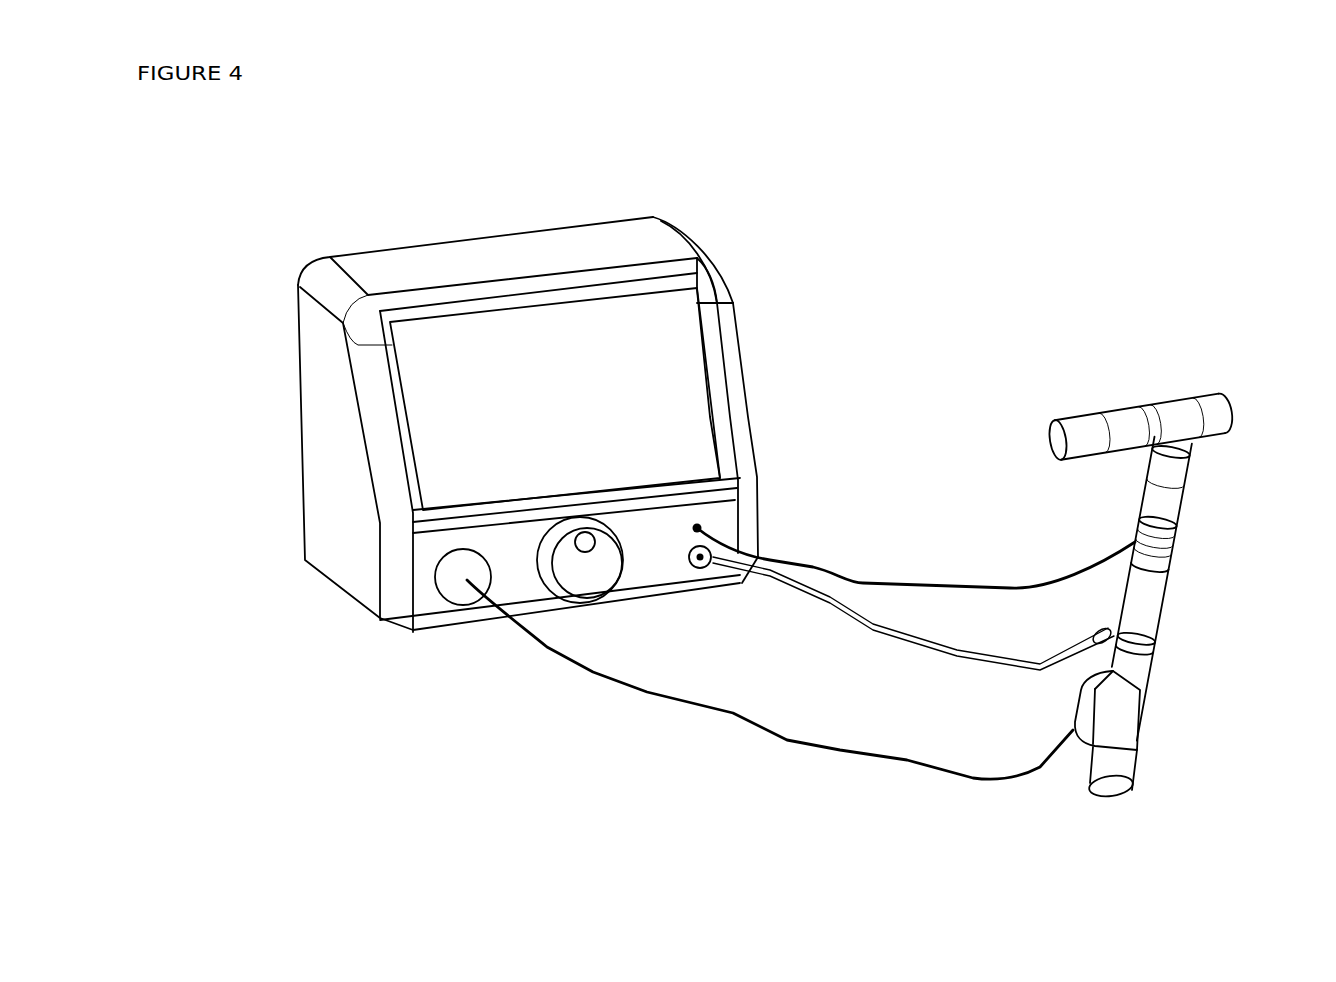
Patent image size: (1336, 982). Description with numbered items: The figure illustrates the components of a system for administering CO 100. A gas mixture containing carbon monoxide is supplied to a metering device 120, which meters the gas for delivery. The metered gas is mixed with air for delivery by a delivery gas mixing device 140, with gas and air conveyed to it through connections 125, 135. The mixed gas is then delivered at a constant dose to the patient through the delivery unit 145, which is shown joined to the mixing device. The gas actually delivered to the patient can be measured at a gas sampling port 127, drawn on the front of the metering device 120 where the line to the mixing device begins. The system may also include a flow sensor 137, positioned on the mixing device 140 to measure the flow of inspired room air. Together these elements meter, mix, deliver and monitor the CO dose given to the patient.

The system for administering CO 100 is at (313, 176).
The metering device 120 is at (551, 405).
The connection 125 is at (957, 653).
The gas sampling port 127 is at (1133, 542).
The connection 135 is at (1112, 781).
The flow sensor 137 is at (1113, 714).
The delivery gas mixing device 140 is at (1036, 361).
The delivery unit 145 is at (1207, 412).